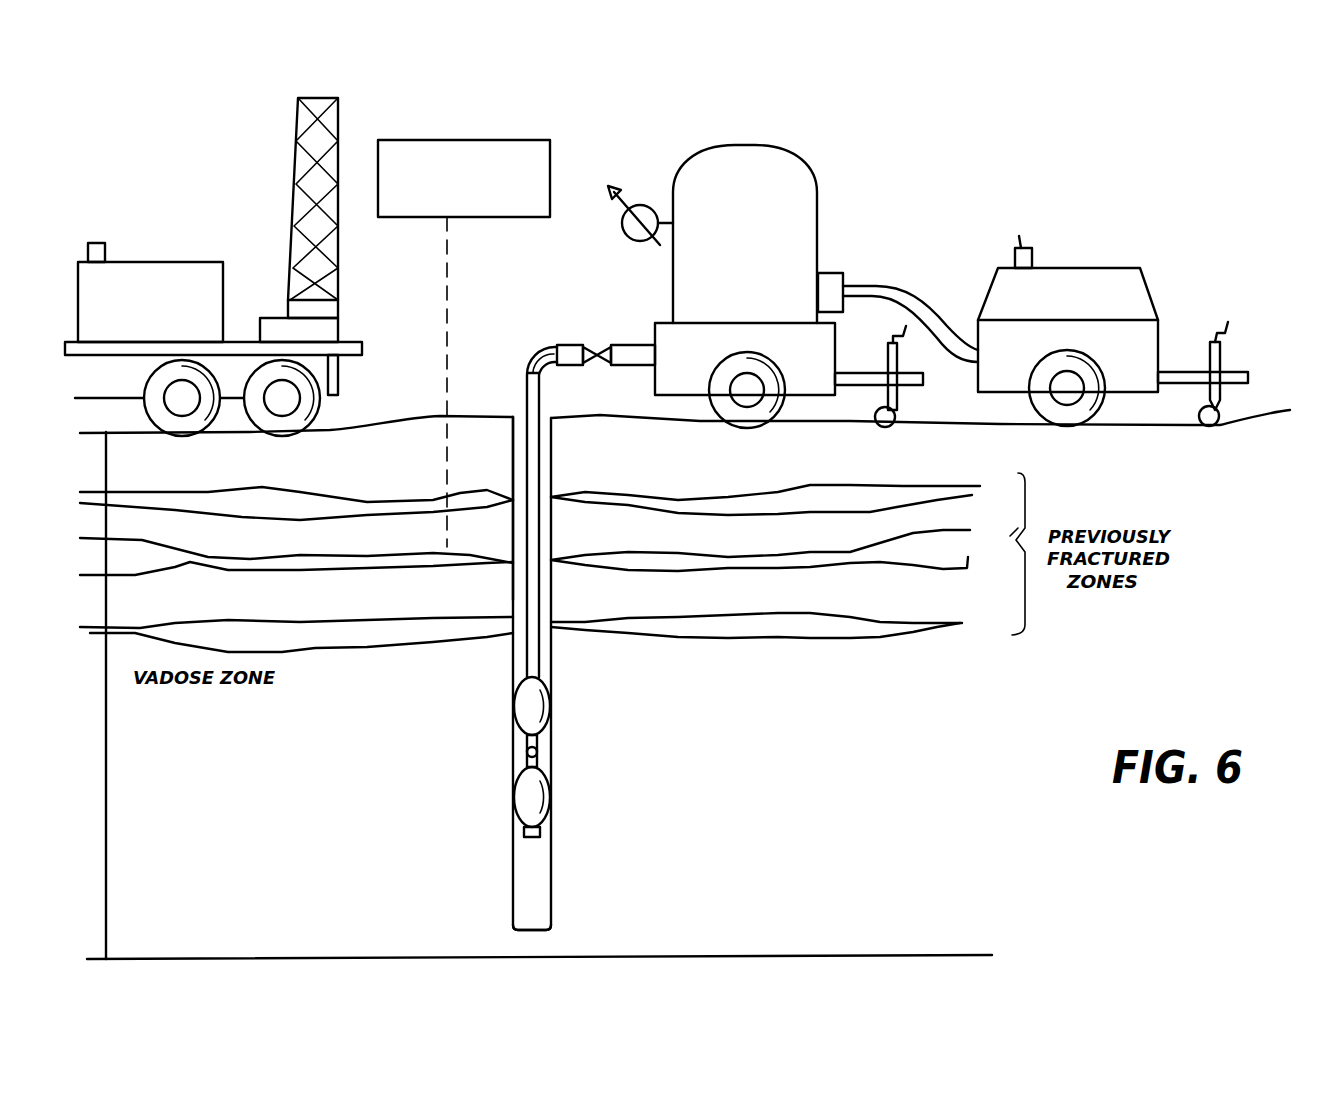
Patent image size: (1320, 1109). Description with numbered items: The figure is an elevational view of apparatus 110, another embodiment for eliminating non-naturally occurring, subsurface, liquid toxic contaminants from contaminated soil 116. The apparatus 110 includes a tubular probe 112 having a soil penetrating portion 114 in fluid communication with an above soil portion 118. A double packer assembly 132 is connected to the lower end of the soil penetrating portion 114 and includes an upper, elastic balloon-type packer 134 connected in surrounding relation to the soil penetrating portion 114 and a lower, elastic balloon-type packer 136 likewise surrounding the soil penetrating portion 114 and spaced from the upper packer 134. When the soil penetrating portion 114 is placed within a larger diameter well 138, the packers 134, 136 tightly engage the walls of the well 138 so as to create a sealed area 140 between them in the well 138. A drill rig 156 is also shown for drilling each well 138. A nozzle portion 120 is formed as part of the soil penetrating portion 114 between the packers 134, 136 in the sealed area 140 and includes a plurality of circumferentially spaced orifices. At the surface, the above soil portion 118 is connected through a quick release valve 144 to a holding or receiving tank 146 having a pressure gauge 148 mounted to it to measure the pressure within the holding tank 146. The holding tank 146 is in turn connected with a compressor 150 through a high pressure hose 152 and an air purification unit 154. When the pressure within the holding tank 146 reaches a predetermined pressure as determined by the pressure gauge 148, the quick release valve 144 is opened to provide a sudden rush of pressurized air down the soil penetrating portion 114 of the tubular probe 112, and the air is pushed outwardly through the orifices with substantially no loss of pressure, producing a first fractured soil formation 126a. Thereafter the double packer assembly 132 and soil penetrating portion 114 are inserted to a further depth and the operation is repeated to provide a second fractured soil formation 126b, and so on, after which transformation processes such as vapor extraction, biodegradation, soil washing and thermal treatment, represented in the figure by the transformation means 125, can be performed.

The apparatus 110 is at (587, 292).
The tubular probe 112 is at (498, 652).
The soil penetrating portion 114 is at (526, 422).
The contaminated soil 116 is at (462, 418).
The above soil portion 118 is at (570, 345).
The nozzle portion 120 is at (542, 757).
The transformation means 125 is at (465, 140).
The first fractured soil formation 126a is at (368, 500).
The second fractured soil formation 126b is at (405, 567).
The double packer assembly 132 is at (498, 782).
The upper packer 134 is at (550, 715).
The lower packer 136 is at (552, 797).
The well 138 is at (517, 880).
The sealed area 140 is at (512, 755).
The quick release valve 144 is at (598, 347).
The holding tank 146 is at (762, 157).
The pressure gauge 148 is at (655, 205).
The compressor 150 is at (1100, 277).
The high pressure hose 152 is at (903, 290).
The air purification unit 154 is at (830, 280).
The drill rig 156 is at (185, 263).